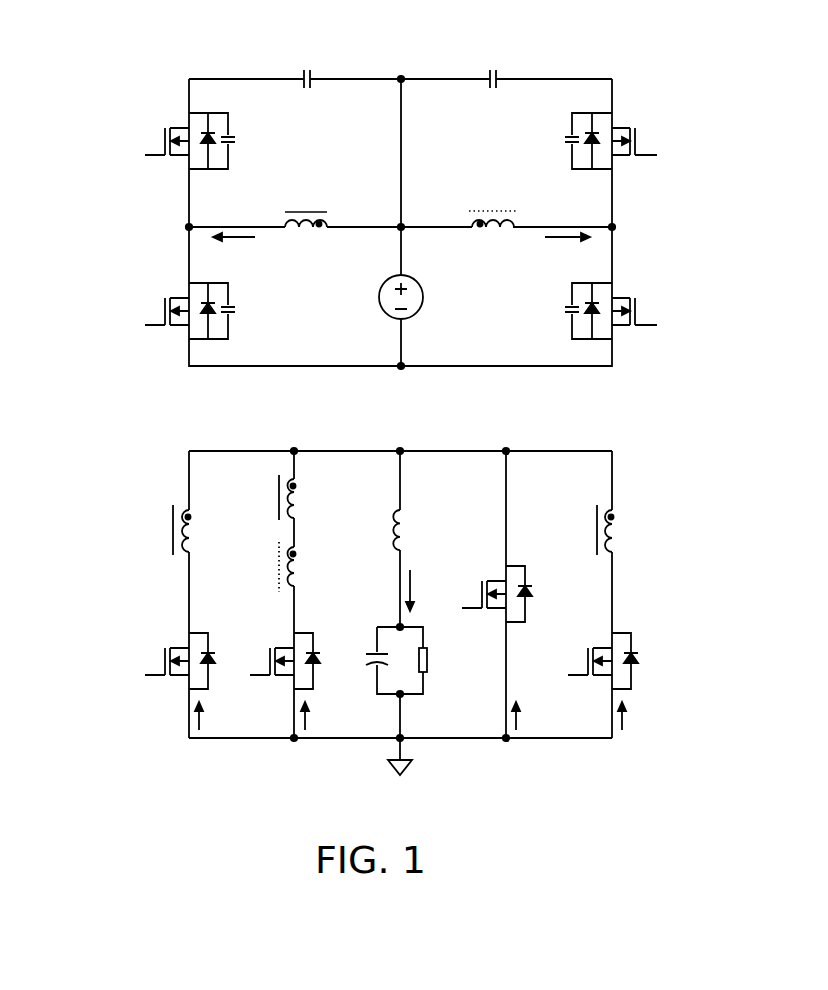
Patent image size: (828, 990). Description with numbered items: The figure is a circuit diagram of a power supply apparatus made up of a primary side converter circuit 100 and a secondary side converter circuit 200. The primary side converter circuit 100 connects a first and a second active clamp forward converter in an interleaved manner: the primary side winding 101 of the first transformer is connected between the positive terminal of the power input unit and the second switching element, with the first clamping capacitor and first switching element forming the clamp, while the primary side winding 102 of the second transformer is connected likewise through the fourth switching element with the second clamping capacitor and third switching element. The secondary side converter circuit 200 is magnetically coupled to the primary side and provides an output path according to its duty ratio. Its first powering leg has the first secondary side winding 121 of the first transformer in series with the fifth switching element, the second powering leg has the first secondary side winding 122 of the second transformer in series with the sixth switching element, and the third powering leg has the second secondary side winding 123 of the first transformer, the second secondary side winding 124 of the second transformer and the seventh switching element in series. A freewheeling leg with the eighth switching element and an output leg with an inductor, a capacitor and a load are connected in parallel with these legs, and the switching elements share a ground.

The primary side converter circuit 100 is at (127, 109).
The primary side winding of first transformer 101 is at (347, 191).
The primary side winding of second transformer 102 is at (539, 191).
The secondary side converter circuit 200 is at (127, 482).
The first secondary side winding of first transformer 121 is at (185, 511).
The first secondary side winding of second transformer 122 is at (617, 511).
The second secondary side winding of first transformer 123 is at (300, 486).
The second secondary side winding of second transformer 124 is at (298, 551).